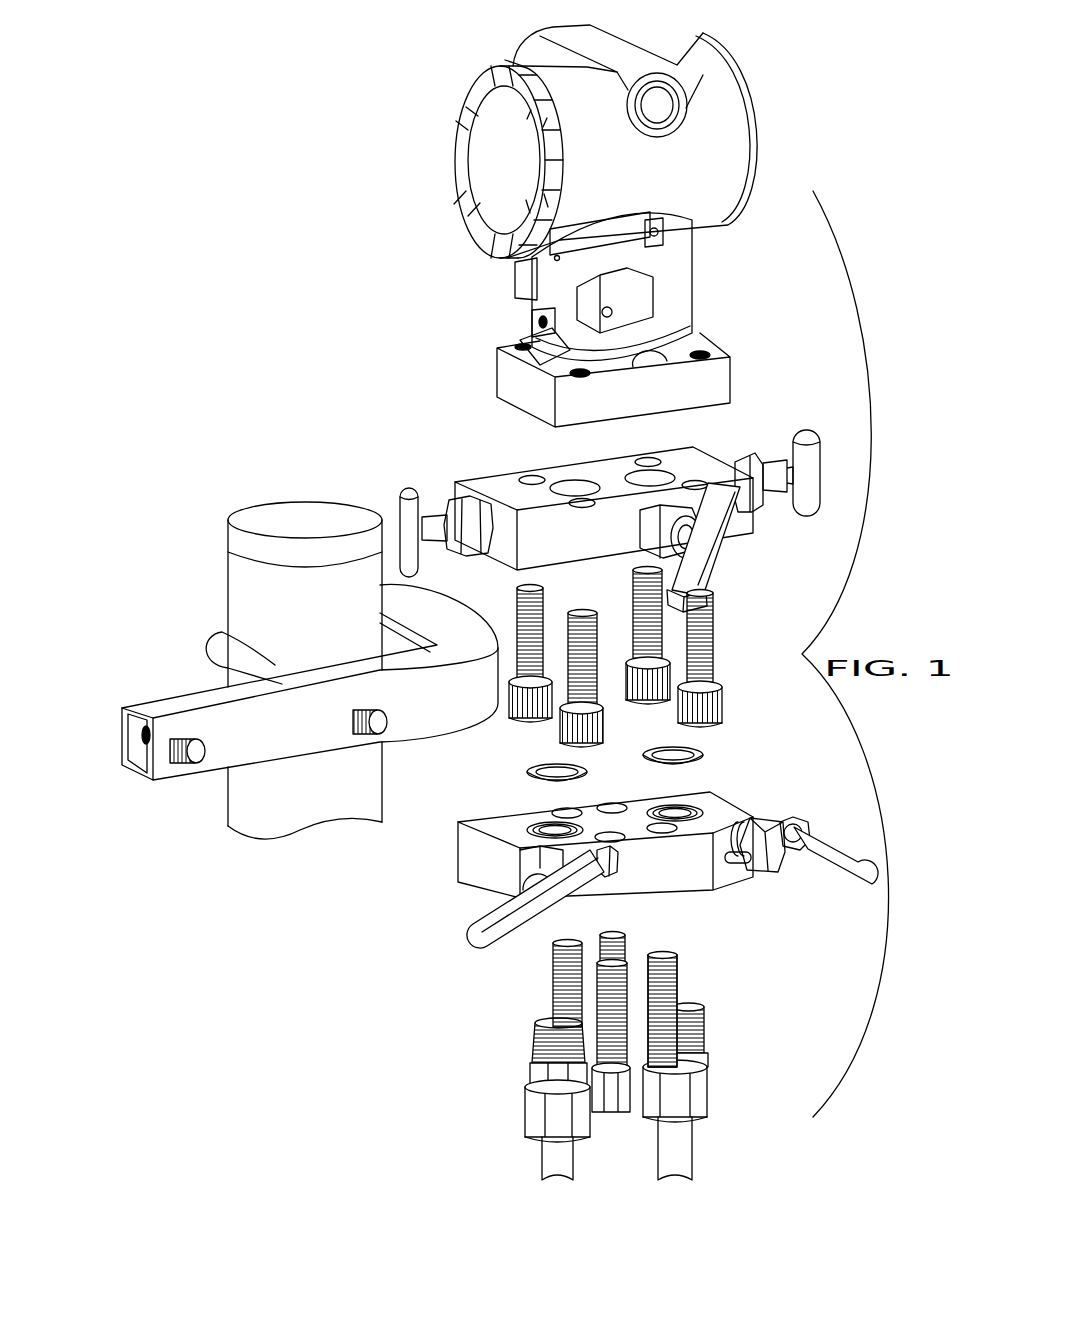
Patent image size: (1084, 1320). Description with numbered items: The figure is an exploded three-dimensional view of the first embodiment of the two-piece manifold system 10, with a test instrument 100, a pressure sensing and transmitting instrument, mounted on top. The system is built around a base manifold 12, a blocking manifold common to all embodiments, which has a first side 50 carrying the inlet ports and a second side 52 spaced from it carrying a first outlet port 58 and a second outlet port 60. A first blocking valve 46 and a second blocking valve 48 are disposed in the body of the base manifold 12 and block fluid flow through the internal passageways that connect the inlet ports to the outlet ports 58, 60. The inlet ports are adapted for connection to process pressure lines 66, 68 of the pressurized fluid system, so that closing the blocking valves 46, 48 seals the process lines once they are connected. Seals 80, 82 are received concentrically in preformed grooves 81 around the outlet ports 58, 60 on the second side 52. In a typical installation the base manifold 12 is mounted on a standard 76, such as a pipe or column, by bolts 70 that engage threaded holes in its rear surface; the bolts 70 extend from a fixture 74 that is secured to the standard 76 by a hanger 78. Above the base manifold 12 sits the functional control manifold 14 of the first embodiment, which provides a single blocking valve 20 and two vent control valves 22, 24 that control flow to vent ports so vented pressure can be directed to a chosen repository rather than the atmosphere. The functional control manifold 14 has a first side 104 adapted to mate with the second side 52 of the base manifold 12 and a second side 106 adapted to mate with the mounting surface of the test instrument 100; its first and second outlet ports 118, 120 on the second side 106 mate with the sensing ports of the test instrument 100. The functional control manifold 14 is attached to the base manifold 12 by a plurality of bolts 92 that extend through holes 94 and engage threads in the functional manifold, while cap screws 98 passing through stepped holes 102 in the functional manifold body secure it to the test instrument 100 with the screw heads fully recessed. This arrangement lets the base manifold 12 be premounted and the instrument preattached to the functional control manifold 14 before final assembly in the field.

The two-piece manifold system 10 is at (385, 413).
The test instrument 100 is at (457, 235).
The functional control manifold 14 is at (713, 447).
The second side 106 is at (617, 482).
The first side 104 is at (537, 568).
The first outlet port 118 is at (575, 487).
The second outlet port 120 is at (642, 485).
The stepped holes 102 is at (578, 503).
The vent control valve 22 is at (477, 527).
The vent control valve 24 is at (760, 492).
The blocking valve 20 is at (700, 565).
The cap screws 98 is at (640, 592).
The fixture 74 is at (195, 705).
The standard 76 is at (248, 578).
The hanger 78 is at (218, 633).
The bolts 70 is at (353, 722).
The seal 80 is at (527, 772).
The seal 82 is at (700, 752).
The base manifold 12 is at (475, 870).
The second side 52 is at (690, 795).
The first side 50 is at (690, 893).
The first outlet port 58 is at (545, 830).
The second outlet port 60 is at (692, 815).
The preformed grooves 81 is at (660, 813).
The holes 94 is at (612, 806).
The first blocking valve 46 is at (520, 890).
The second blocking valve 48 is at (765, 832).
The bolts 92 is at (610, 937).
The process pressure line 66 is at (560, 1157).
The process pressure line 68 is at (690, 1140).